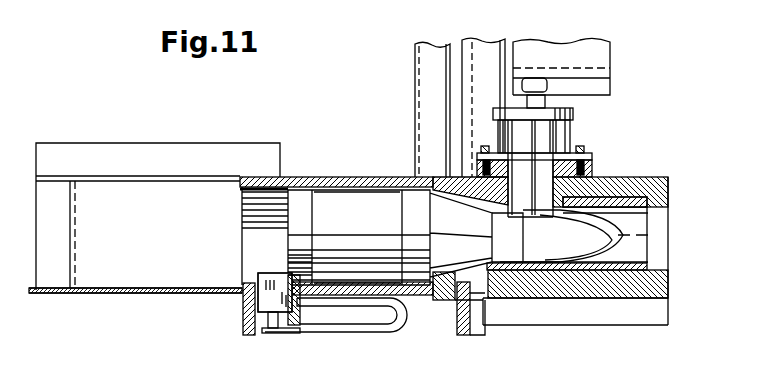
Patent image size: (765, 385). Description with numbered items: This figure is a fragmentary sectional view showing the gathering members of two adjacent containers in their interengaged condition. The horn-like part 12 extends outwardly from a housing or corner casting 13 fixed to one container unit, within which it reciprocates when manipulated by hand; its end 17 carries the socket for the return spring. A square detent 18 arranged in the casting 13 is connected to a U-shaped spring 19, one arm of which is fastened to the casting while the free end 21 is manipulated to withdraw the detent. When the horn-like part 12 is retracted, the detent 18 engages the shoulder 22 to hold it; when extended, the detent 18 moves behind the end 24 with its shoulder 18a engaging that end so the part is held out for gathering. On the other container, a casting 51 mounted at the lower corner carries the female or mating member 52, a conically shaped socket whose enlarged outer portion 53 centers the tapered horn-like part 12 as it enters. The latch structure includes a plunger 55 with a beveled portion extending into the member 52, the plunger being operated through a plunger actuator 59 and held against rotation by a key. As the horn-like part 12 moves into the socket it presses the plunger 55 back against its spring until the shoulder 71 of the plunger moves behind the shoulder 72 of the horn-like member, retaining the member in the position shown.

The horn-like part 12 is at (620, 232).
The housing or corner casting 13 is at (318, 177).
The end of the horn-like member 17 is at (342, 208).
The detent 18 is at (264, 300).
The shoulder of the detent 18a is at (300, 262).
The U-shaped spring 19 is at (346, 333).
The free end 21 is at (308, 330).
The shoulder 22 is at (432, 296).
The end 24 is at (270, 185).
The casting 51 is at (618, 180).
The female or mating member 52 is at (598, 292).
The enlarged outer portion 53 is at (449, 280).
The plunger 55 is at (565, 152).
The plunger actuator 59 is at (547, 103).
The shoulder of the plunger 71 is at (548, 195).
The shoulder of the horn-like member 72 is at (542, 270).